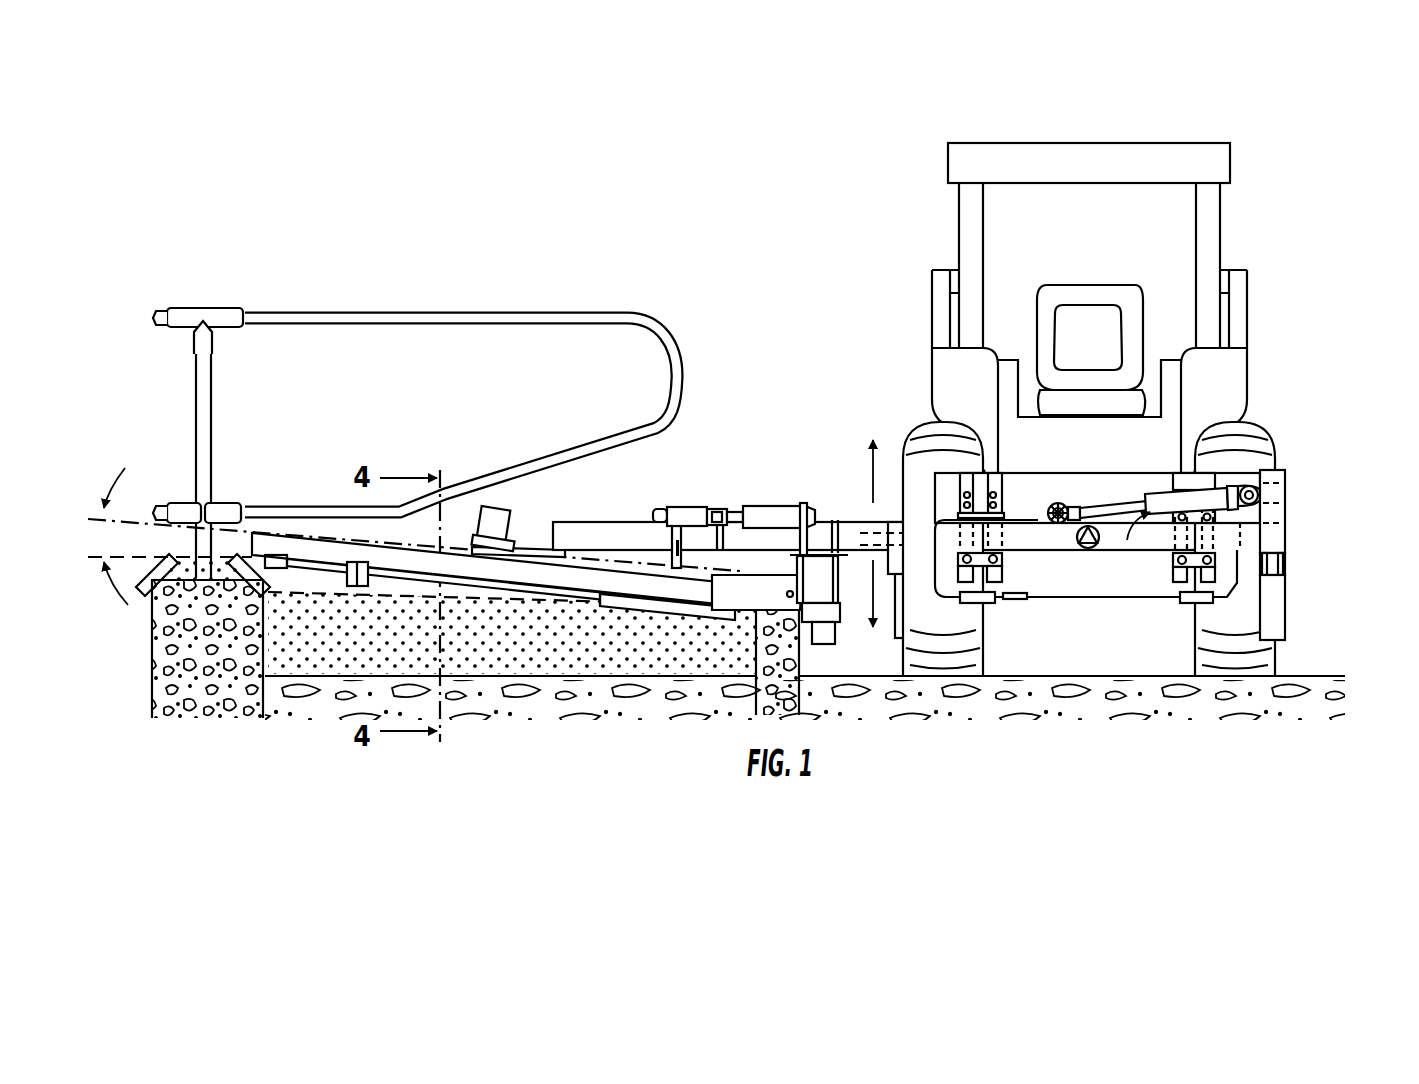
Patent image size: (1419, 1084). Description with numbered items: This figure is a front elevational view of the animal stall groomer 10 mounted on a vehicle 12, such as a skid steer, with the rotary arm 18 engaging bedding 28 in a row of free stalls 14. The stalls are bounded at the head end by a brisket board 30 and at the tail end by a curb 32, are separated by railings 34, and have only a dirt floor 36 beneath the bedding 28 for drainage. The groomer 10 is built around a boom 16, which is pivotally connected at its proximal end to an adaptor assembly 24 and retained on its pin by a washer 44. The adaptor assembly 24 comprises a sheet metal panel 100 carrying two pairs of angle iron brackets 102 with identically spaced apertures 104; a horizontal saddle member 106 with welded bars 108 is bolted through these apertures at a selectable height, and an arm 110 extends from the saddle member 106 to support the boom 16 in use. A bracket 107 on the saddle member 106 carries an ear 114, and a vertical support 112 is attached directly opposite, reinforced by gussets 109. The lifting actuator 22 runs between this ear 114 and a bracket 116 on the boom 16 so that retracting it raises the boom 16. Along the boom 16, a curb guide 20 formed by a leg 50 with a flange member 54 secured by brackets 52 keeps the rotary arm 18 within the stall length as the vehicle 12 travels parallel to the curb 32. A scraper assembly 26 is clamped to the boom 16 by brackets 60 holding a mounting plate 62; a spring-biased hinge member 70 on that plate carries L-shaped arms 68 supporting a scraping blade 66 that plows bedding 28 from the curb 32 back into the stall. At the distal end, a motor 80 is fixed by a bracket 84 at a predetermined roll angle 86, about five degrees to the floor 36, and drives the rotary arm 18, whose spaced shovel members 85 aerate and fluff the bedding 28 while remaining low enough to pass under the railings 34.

The animal stall groomer 10 is at (1300, 537).
The vehicle 12 is at (1228, 212).
The free stalls 14 is at (447, 385).
The boom 16 is at (700, 527).
The rotary arm 18 is at (662, 537).
The curb guide 20 is at (820, 638).
The lifting actuator 22 is at (1127, 540).
The adaptor assembly 24 is at (1013, 608).
The scraper assembly 26 is at (802, 504).
The bedding 28 is at (563, 642).
The brisket board 30 is at (215, 642).
The curb 32 is at (806, 662).
The railings 34 is at (650, 322).
The floor 36 is at (612, 692).
The washer 44 is at (1092, 549).
The leg 50 is at (820, 586).
The brackets 52 is at (878, 480).
The flange member 54 is at (826, 560).
The brackets 60 is at (664, 608).
The mounting plate 62 is at (745, 520).
The scraping blade 66 is at (740, 604).
The L-shaped arms 68 is at (792, 512).
The hinge member 70 is at (666, 553).
The motor 80 is at (496, 516).
The bracket 84 is at (530, 552).
The shovel members 85 is at (360, 588).
The angle 86 is at (101, 518).
The panel 100 is at (1098, 492).
The brackets 102 is at (998, 481).
The apertures 104 is at (1008, 502).
The saddle member 106 is at (1130, 540).
The bracket 107 is at (1282, 512).
The bars 108 is at (988, 562).
The gussets 109 is at (1286, 570).
The arm 110 is at (903, 523).
The vertical support 112 is at (1280, 605).
The ear 114 is at (1258, 472).
The bracket 116 is at (1052, 504).